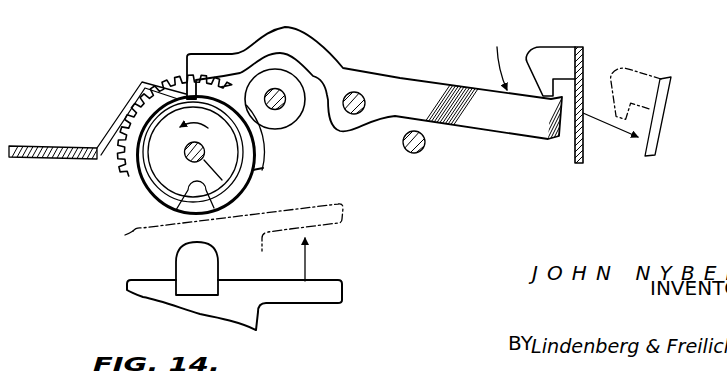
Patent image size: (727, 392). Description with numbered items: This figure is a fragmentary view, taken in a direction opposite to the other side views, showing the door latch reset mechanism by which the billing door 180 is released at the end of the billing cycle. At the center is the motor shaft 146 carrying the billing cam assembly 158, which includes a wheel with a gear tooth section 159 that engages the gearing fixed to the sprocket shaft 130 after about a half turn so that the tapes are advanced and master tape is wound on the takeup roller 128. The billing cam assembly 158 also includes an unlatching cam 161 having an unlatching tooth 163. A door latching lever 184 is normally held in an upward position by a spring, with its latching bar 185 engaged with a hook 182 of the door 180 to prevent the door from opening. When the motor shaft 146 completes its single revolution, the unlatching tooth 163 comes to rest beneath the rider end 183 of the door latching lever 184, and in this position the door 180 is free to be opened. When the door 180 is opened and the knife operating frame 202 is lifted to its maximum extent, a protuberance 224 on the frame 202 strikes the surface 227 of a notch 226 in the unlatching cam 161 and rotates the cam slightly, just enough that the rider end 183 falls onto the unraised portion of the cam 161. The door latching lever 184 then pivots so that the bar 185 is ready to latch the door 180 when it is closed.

The takeup roller 128 is at (412, 153).
The sprocket shaft 130 is at (278, 110).
The motor shaft 146 is at (184, 156).
The billing cam assembly 158 is at (263, 170).
The gear tooth section 159 is at (118, 153).
The unlatching cam 161 is at (212, 166).
The unlatching tooth 163 is at (173, 104).
The door 180 is at (583, 158).
The hook 182 is at (543, 79).
The rider end 183 is at (196, 86).
The door latching lever 184 is at (505, 122).
The latching bar 185 is at (552, 144).
The knife operating frame 202 is at (120, 293).
The protuberance 224 is at (177, 262).
The notch 226 is at (182, 186).
The surface 227 is at (213, 154).